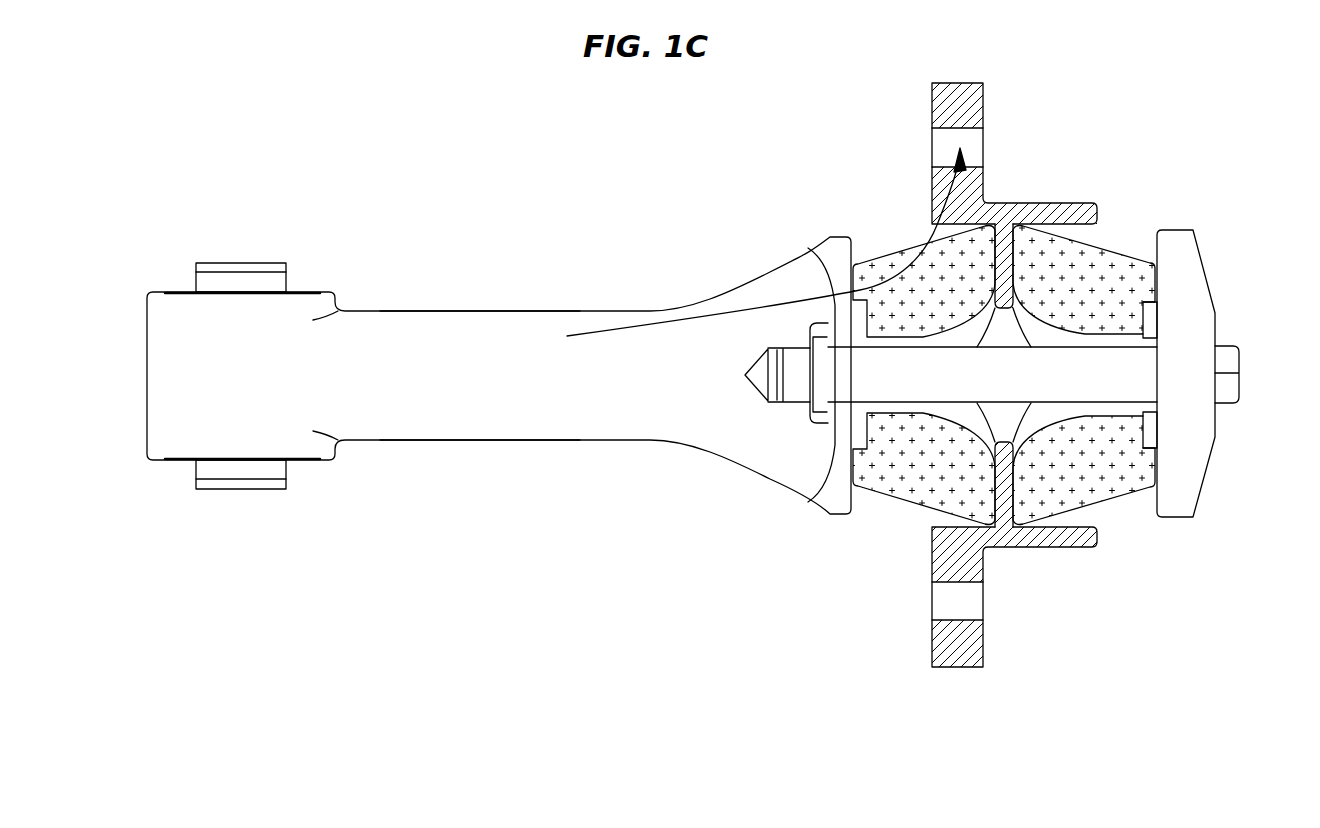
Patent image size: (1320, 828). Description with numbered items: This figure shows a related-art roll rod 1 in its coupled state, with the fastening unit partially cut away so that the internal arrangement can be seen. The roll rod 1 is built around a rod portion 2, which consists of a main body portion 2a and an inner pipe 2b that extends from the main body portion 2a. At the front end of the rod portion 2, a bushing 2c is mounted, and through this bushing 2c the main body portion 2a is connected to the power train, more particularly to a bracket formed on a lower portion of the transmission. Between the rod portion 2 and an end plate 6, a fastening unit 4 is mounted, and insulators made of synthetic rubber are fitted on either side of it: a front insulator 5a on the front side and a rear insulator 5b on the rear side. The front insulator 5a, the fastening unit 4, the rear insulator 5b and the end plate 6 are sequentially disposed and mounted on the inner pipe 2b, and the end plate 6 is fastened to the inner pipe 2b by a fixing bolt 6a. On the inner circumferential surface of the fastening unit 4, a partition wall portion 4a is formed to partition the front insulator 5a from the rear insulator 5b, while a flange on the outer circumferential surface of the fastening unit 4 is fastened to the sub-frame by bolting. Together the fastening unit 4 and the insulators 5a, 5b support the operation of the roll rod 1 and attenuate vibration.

The roll rod 1 is at (452, 178).
The rod portion 2 is at (586, 440).
The main body portion 2a is at (525, 418).
The inner pipe 2b is at (1077, 360).
The bushing 2c is at (235, 460).
The fastening unit 4 is at (943, 558).
The partition wall portion 4a is at (1012, 478).
The front insulator 5a is at (903, 457).
The rear insulator 5b is at (1087, 480).
The end plate 6 is at (1182, 283).
The fixing bolt 6a is at (803, 390).